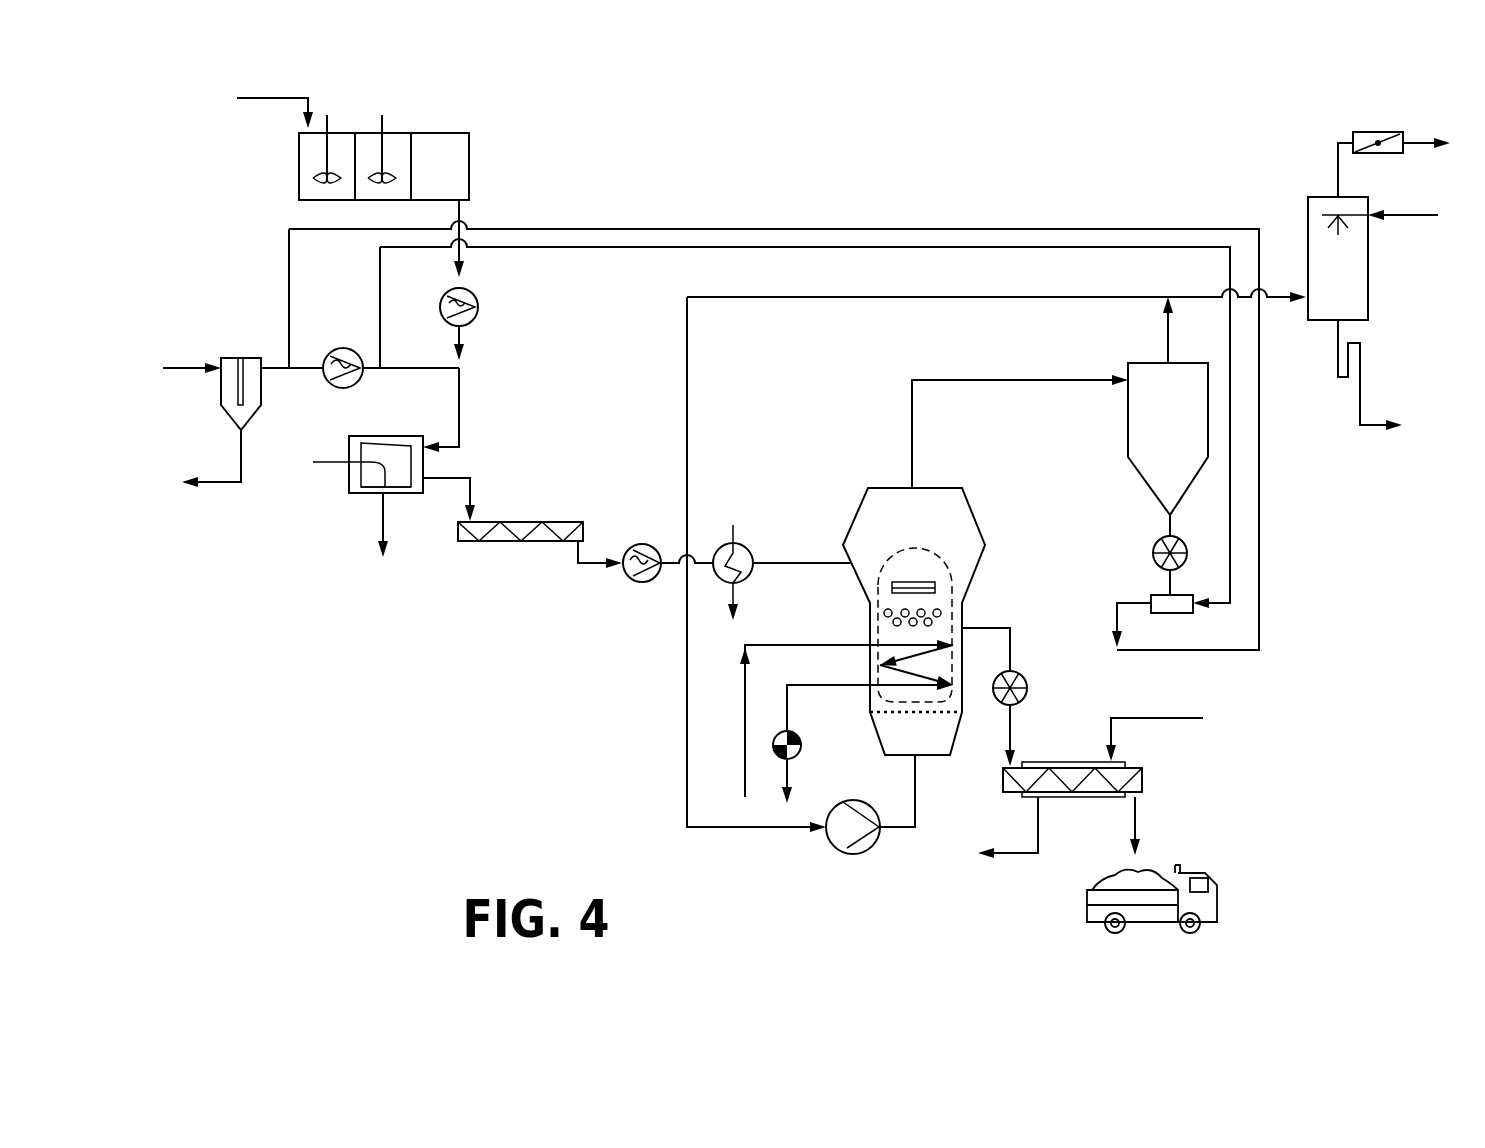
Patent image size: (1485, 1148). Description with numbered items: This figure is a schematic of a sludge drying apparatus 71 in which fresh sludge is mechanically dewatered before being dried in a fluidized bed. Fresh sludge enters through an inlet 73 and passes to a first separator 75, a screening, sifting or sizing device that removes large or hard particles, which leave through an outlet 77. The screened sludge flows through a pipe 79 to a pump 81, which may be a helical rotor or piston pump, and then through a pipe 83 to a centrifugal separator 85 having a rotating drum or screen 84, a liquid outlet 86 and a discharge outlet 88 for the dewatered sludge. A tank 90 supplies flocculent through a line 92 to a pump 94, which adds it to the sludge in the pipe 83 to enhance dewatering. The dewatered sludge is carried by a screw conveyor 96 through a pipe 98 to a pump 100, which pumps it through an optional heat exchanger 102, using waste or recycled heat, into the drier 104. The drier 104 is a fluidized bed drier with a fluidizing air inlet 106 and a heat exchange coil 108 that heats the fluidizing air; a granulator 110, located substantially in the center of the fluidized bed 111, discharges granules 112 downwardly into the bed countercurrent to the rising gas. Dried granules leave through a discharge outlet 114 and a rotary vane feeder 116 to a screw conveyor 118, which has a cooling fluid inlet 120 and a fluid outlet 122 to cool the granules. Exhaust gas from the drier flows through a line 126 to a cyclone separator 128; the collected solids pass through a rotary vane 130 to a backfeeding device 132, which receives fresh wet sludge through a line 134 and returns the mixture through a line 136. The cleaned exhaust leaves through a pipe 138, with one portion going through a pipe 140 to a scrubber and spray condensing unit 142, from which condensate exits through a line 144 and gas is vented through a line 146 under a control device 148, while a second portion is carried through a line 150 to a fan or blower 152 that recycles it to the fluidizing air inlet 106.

The apparatus 71 is at (418, 695).
The inlet 73 is at (177, 365).
The first separator 75 is at (250, 362).
The outlet 77 is at (241, 458).
The pipe 79 is at (307, 372).
The pump 81 is at (345, 347).
The pipe 83 is at (423, 367).
The rotating drum or screen 84 is at (426, 467).
The centrifugal separator 85 is at (403, 493).
The liquid outlet 86 is at (380, 512).
The discharge outlet 88 is at (470, 487).
The tank 90 is at (457, 168).
The line 92 is at (462, 212).
The pump 94 is at (478, 305).
The screw conveyor 96 is at (497, 537).
The pipe 98 is at (592, 548).
The pump 100 is at (650, 583).
The heat exchanger 102 is at (745, 545).
The drier 104 is at (955, 540).
The fluidizing air inlet 106 is at (915, 798).
The heat exchange coil 108 is at (883, 642).
The granulator 110 is at (948, 578).
The fluidized bed 111 is at (888, 532).
The granules 112 is at (942, 613).
The discharge outlet 114 is at (1015, 638).
The rotary vane feeder 116 is at (1028, 685).
The screw conveyor 118 is at (1142, 785).
The cooling fluid inlet 120 is at (1167, 718).
The fluid outlet 122 is at (1020, 853).
The line 126 is at (965, 380).
The cyclone separator 128 is at (1133, 400).
The rotary vane 130 is at (1153, 553).
The backfeeding device 132 is at (1178, 613).
The line 134 is at (1232, 543).
The line 136 is at (1262, 510).
The pipe 138 is at (1168, 333).
The pipe 140 is at (1200, 297).
The scrubber and spray condensing unit 142 is at (1362, 283).
The line 144 is at (1360, 383).
The line 146 is at (1417, 143).
The control device 148 is at (1375, 142).
The line 150 is at (1005, 297).
The fan or blower 152 is at (855, 857).